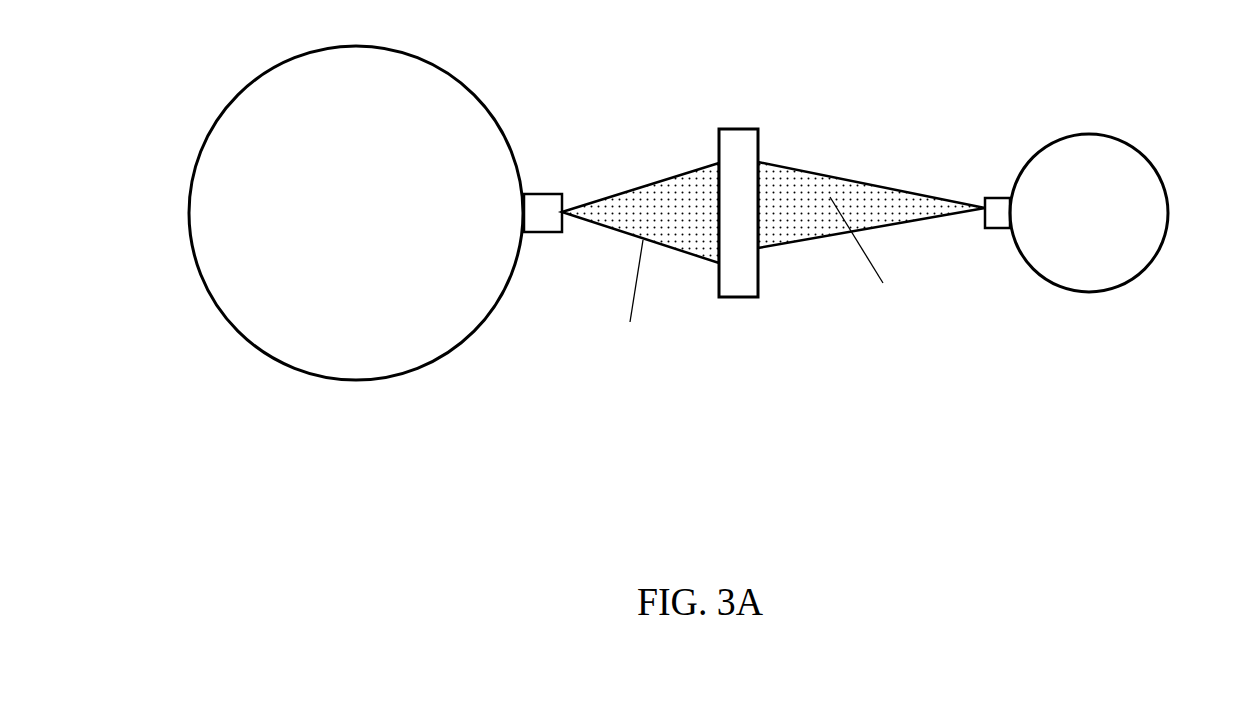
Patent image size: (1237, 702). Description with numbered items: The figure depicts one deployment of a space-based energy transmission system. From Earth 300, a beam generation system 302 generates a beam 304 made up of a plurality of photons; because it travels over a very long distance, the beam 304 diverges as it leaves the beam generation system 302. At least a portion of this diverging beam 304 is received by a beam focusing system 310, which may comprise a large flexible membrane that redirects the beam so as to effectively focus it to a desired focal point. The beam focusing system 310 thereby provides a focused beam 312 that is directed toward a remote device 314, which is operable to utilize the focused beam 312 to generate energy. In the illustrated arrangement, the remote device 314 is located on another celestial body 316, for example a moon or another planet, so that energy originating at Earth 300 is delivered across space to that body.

The Earth 300 is at (407, 51).
The beam generation system 302 is at (543, 232).
The beam 304 is at (642, 185).
The beam focusing system 310 is at (739, 297).
The focused beam 312 is at (871, 184).
The remote device 314 is at (1000, 228).
The celestial body 316 is at (1123, 285).